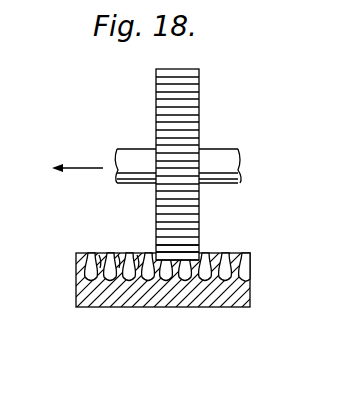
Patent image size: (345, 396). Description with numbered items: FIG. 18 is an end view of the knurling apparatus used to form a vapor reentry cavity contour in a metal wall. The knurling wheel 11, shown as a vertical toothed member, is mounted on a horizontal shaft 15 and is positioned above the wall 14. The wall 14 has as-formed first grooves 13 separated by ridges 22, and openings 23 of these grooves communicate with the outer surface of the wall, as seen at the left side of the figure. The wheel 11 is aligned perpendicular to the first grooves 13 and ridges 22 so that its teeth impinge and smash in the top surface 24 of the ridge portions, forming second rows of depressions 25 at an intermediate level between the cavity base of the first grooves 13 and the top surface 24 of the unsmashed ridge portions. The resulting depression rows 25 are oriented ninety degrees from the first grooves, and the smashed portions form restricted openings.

The wheel 11 is at (204, 87).
The first grooves 13 is at (118, 305).
The wall 14 is at (88, 300).
The shaft 15 is at (225, 150).
The ridges 22 is at (106, 253).
The openings 23 is at (132, 253).
The top surface 24 is at (115, 253).
The second rows of depressions 25 is at (188, 262).